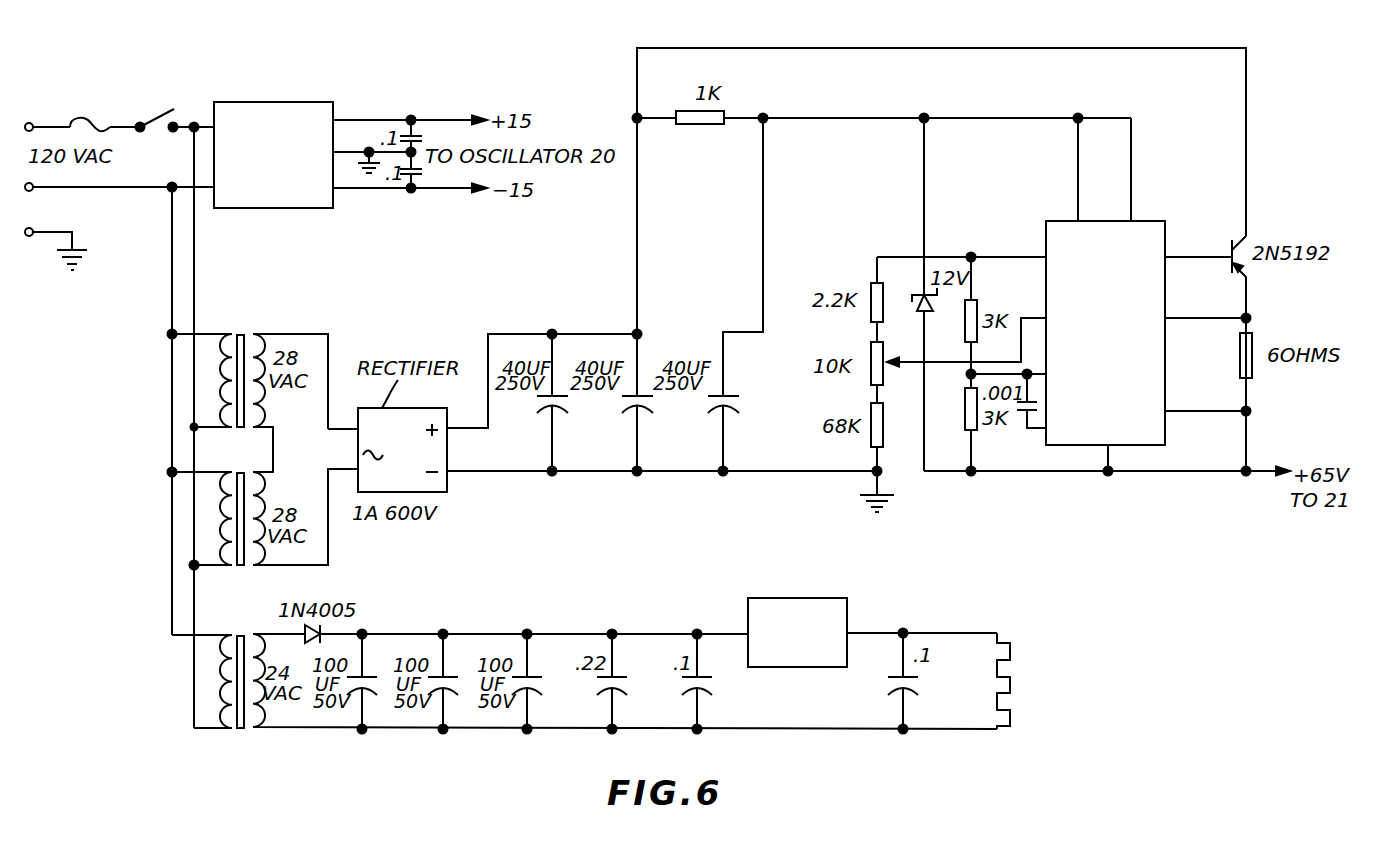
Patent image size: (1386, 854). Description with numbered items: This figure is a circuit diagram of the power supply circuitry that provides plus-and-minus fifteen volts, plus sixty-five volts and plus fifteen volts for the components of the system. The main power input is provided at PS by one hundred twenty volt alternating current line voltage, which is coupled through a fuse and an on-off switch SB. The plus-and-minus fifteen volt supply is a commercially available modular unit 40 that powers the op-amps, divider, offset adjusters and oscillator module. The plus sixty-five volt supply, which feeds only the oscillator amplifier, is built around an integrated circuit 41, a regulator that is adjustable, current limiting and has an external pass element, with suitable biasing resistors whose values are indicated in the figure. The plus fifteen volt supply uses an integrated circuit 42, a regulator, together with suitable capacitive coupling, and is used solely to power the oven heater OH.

The modular unit 40 is at (270, 110).
The integrated circuit regulator 41 is at (1120, 356).
The 7815 15 volt regulator 42 is at (847, 606).
The main power input PS is at (38, 118).
The on-off switch SB is at (86, 112).
The oven heater OH is at (1007, 718).